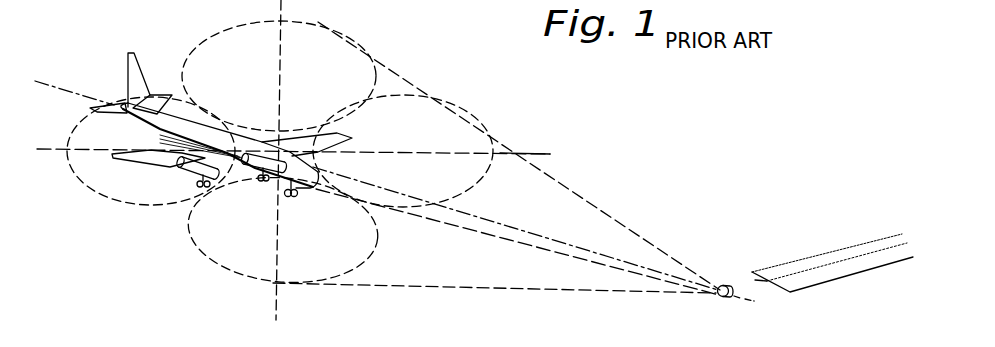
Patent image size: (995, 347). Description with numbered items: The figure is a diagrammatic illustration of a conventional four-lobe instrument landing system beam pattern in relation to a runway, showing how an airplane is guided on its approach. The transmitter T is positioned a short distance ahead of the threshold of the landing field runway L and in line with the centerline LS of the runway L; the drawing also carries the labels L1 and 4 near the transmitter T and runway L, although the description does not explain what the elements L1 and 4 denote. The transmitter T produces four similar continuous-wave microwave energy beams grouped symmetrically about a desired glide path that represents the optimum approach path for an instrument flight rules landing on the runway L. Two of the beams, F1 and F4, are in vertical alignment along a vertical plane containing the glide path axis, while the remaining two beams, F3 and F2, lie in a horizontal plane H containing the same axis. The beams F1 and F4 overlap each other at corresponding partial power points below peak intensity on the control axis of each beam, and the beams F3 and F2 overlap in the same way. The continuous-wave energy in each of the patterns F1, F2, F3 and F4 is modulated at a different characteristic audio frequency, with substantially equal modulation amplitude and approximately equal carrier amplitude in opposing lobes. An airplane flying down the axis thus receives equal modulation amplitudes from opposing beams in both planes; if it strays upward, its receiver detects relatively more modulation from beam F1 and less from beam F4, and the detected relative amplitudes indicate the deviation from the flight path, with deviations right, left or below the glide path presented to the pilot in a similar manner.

The beam F1 is at (279, 76).
The beam F2 is at (403, 151).
The beam F3 is at (151, 151).
The beam F4 is at (283, 230).
The horizontal plane H is at (537, 157).
The transmitter T is at (720, 285).
The transmitter axis 4 is at (735, 299).
The runway L is at (805, 265).
The centerline LS is at (851, 262).
The landing surface edge line L1 is at (755, 280).